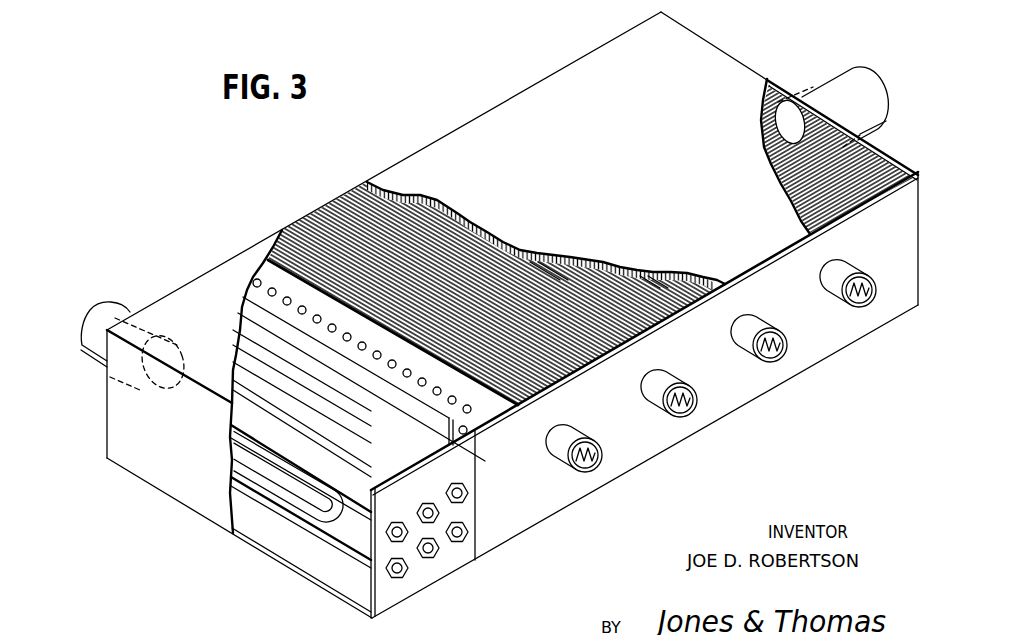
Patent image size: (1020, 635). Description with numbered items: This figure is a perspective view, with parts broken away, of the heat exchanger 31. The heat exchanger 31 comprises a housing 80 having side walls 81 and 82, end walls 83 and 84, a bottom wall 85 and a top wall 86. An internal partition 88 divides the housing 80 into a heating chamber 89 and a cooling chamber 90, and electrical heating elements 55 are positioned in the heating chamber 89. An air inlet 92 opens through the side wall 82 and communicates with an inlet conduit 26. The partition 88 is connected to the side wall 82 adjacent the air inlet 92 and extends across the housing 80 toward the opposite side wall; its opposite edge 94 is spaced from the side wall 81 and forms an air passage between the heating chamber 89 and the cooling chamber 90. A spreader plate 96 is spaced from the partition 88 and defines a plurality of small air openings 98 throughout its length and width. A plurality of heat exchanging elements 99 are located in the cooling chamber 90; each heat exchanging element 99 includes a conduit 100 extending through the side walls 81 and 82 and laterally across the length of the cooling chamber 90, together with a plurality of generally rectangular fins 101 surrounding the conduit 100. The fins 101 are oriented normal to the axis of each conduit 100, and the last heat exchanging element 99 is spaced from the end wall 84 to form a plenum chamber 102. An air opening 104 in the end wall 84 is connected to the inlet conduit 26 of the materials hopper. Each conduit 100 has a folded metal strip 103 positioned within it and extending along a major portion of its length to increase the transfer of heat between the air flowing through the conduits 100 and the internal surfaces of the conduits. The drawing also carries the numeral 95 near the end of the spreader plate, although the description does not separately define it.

The inlet conduit 26 is at (105, 312).
The heat exchanger 31 is at (395, 162).
The electrical heating elements 55 is at (266, 443).
The housing 80 is at (490, 522).
The side wall 81 is at (707, 412).
The side wall 82 is at (327, 208).
The end wall 83 is at (193, 500).
The end wall 84 is at (893, 175).
The bottom wall 85 is at (292, 553).
The top wall 86 is at (157, 335).
The internal partition 88 is at (238, 300).
The heating chamber 89 is at (345, 567).
The cooling chamber 90 is at (368, 183).
The air inlet 92 is at (187, 340).
The opposite edge 94 is at (438, 422).
The perforated plate end 95 is at (444, 439).
The spreader plate 96 is at (305, 305).
The small air openings 98 is at (388, 350).
The heat exchanging elements 99 is at (572, 245).
The conduit 100 is at (565, 443).
The fins 101 is at (645, 280).
The plenum chamber 102 is at (865, 160).
The folded metal strips 103 is at (577, 470).
The air opening 104 is at (800, 98).